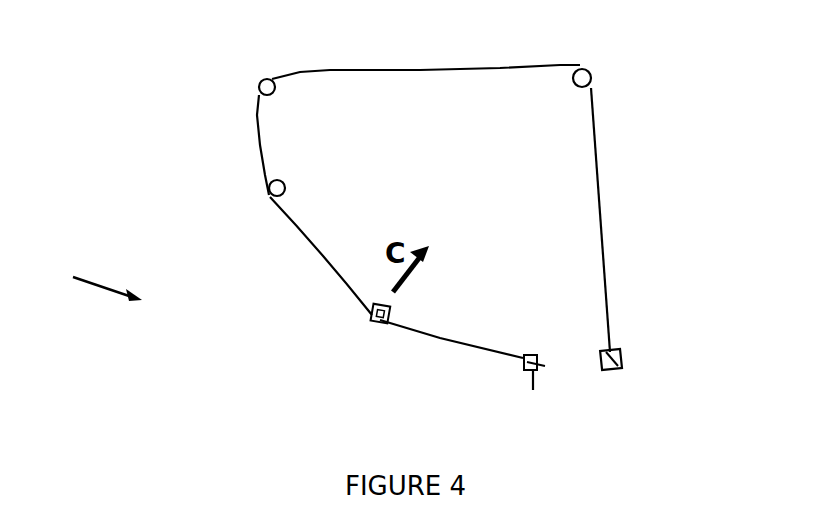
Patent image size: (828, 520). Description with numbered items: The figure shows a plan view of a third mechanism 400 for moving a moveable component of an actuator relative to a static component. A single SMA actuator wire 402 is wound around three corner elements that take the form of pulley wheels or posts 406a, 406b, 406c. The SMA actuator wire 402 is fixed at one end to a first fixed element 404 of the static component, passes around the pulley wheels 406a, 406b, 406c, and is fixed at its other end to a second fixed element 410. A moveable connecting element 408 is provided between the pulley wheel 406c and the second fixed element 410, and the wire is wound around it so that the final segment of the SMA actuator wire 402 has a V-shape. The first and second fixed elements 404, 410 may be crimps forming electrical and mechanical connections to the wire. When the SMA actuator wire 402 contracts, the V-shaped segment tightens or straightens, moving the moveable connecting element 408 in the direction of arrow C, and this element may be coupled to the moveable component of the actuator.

The third mechanism 400 is at (93, 267).
The SMA actuator wire 402 is at (603, 216).
The first fixed element 404 is at (614, 352).
The pulley wheel 406a is at (587, 67).
The pulley wheel 406b is at (261, 80).
The pulley wheel 406c is at (269, 197).
The moveable connecting element 408 is at (377, 325).
The second fixed element 410 is at (530, 398).